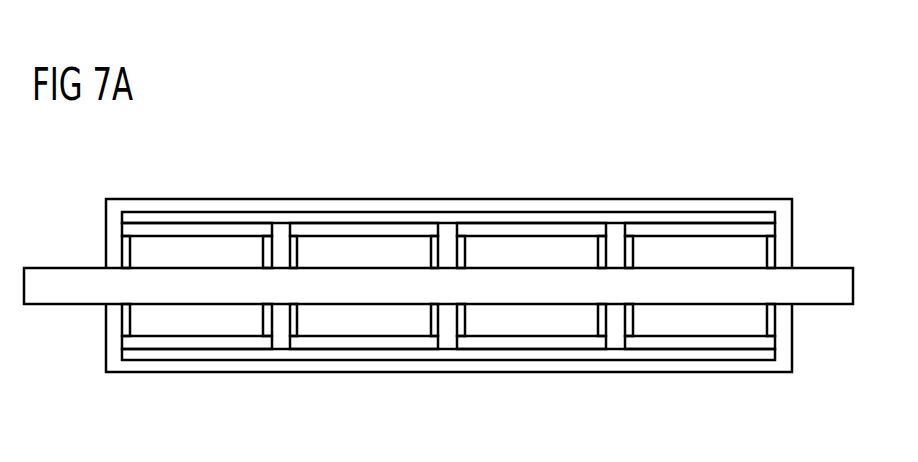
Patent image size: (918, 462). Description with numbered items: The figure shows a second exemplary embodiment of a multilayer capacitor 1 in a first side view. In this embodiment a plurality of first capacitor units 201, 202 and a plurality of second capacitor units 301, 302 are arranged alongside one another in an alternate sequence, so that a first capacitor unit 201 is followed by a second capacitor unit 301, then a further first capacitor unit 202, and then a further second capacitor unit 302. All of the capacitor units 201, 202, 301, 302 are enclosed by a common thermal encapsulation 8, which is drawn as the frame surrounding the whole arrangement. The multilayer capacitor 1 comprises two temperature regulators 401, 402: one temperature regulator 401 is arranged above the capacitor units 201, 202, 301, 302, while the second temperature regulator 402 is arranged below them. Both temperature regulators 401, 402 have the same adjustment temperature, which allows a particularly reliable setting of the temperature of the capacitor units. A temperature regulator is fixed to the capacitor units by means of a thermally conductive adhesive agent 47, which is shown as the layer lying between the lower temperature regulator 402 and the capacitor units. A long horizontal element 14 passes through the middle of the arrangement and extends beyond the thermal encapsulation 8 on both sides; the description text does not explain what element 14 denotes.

The multilayer capacitor 1 is at (438, 255).
The thermal encapsulation 8 is at (288, 372).
The carrier 14 is at (72, 278).
The first capacitor unit 201 is at (192, 247).
The first capacitor unit 202 is at (532, 247).
The second capacitor unit 301 is at (360, 247).
The second capacitor unit 302 is at (697, 247).
The temperature regulator 401 is at (590, 220).
The temperature regulator 402 is at (735, 353).
The thermally conductive adhesive agent 47 is at (665, 343).